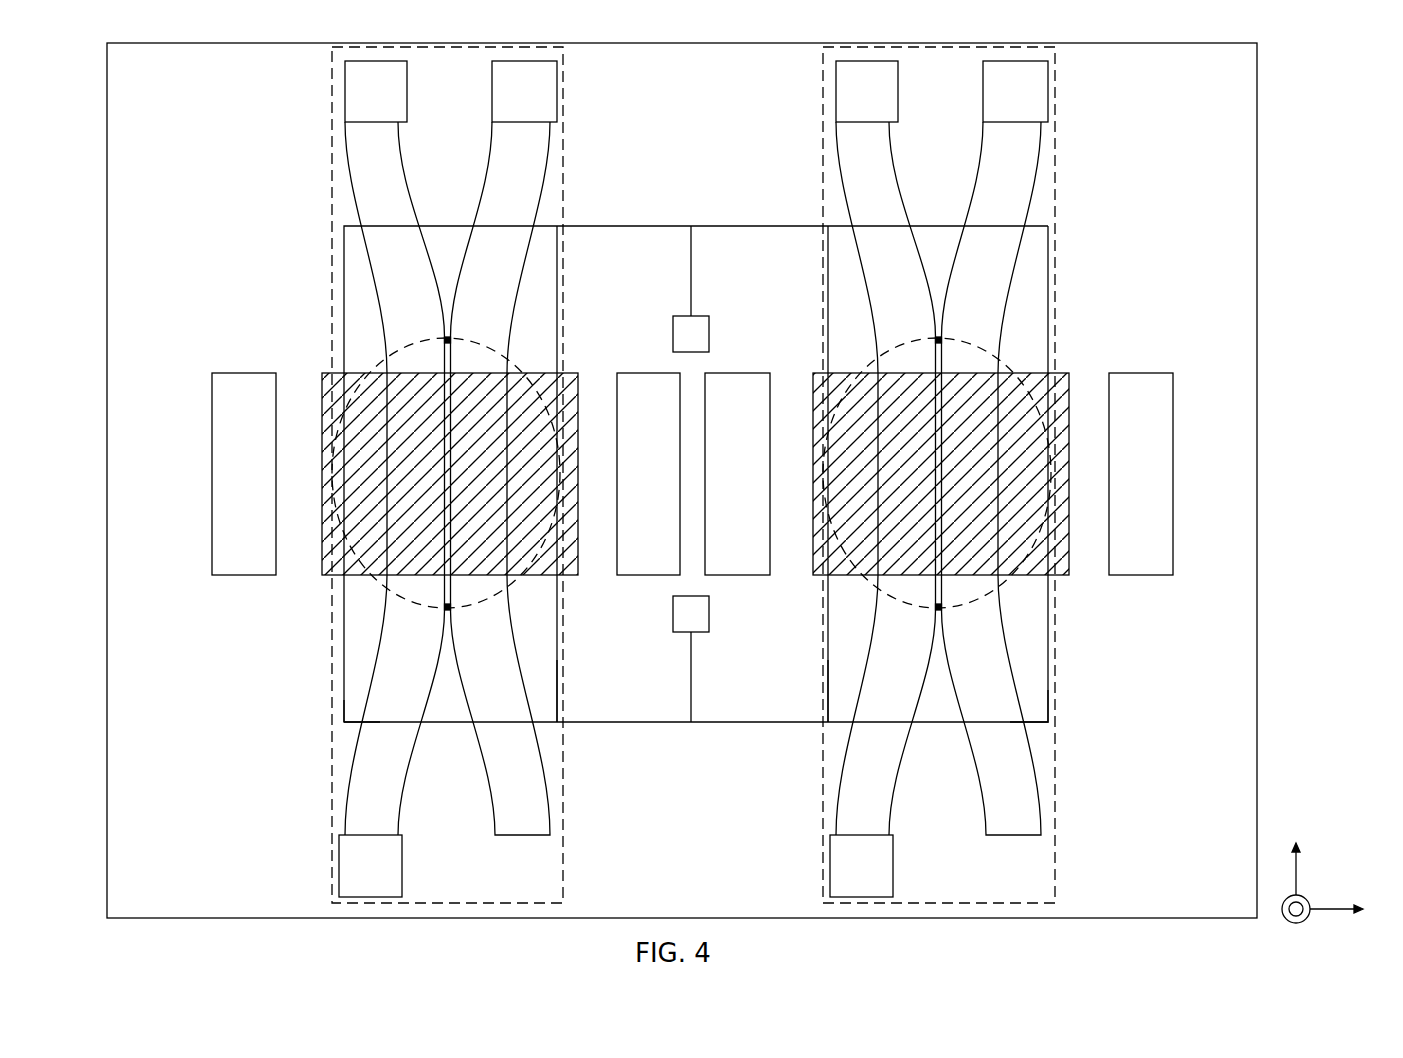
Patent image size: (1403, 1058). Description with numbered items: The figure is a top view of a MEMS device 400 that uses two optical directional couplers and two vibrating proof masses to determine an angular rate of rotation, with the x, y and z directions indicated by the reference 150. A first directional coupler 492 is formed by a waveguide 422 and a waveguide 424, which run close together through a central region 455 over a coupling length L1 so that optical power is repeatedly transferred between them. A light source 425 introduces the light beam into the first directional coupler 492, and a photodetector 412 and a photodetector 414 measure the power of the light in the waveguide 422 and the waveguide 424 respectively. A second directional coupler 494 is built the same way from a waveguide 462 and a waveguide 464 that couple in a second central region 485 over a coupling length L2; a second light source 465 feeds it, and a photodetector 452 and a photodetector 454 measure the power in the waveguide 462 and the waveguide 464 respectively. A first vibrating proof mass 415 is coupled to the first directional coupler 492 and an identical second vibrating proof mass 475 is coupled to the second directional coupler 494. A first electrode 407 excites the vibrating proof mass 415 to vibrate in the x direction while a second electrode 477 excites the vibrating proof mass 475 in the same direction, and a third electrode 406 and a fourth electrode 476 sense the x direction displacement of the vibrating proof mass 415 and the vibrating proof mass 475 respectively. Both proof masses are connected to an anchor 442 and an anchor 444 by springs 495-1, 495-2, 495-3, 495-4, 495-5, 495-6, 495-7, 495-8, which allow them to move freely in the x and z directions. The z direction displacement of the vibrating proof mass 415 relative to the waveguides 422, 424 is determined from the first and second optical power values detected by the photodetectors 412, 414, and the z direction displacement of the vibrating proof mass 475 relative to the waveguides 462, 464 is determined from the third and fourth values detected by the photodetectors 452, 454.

The MEMS device 400 is at (1287, 162).
The reference 150 is at (1330, 865).
The photodetector 412 is at (345, 94).
The photodetector 414 is at (557, 94).
The waveguide 422 is at (345, 148).
The waveguide 424 is at (552, 148).
The light source 425 is at (339, 866).
The vibrating proof mass 415 is at (370, 390).
The central region 455 is at (345, 546).
The first electrode 407 is at (228, 474).
The coupling length L1 is at (442, 445).
The first directional coupler 492 is at (332, 660).
The second directional coupler 494 is at (1055, 653).
The spring 495-1 is at (344, 252).
The spring 495-2 is at (1048, 240).
The spring 495-3 is at (563, 287).
The spring 495-4 is at (823, 270).
The spring 495-5 is at (344, 708).
The spring 495-6 is at (563, 678).
The spring 495-7 is at (823, 678).
The spring 495-8 is at (1048, 695).
The anchor 442 is at (709, 334).
The anchor 444 is at (697, 632).
The third electrode 406 is at (637, 578).
The fourth electrode 476 is at (750, 578).
The photodetector 452 is at (837, 94).
The photodetector 454 is at (1048, 94).
The waveguide 462 is at (837, 148).
The waveguide 464 is at (1045, 148).
The second light source 465 is at (830, 866).
The vibrating proof mass 475 is at (1050, 378).
The central region 485 is at (1038, 546).
The second electrode 477 is at (1165, 474).
The coupling length L2 is at (940, 445).